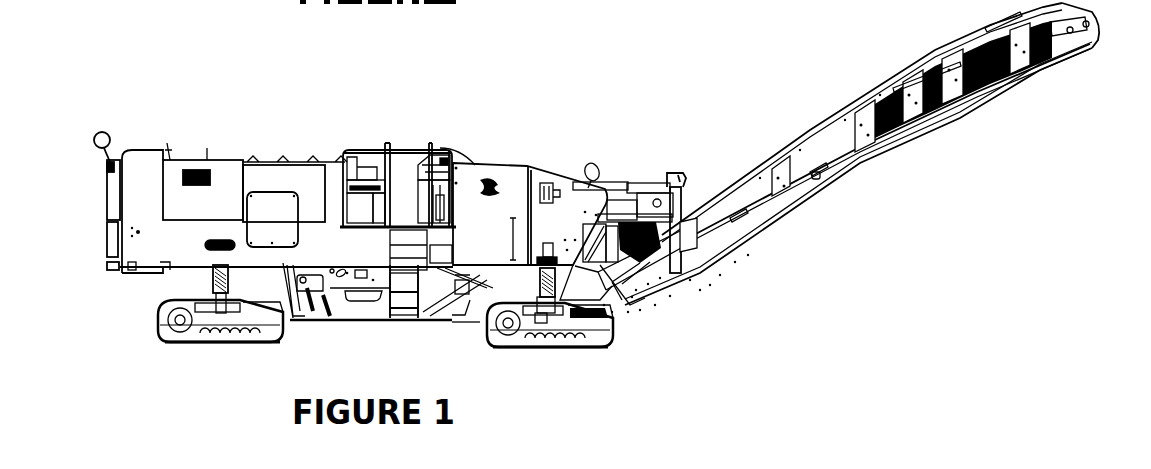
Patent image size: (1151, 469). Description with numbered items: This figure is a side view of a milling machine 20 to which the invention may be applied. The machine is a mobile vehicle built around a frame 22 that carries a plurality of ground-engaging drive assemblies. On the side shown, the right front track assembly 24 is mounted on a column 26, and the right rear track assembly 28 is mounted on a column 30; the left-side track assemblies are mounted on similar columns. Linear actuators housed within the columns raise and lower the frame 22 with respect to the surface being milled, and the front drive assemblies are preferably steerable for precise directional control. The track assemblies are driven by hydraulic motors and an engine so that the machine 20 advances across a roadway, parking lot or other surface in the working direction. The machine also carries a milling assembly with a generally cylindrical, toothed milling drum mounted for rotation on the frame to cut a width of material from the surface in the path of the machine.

The milling machine 20 is at (621, 108).
The frame 22 is at (153, 266).
The right front track assembly 24 is at (617, 344).
The column 26 is at (564, 287).
The right rear track assembly 28 is at (197, 343).
The column 30 is at (204, 284).